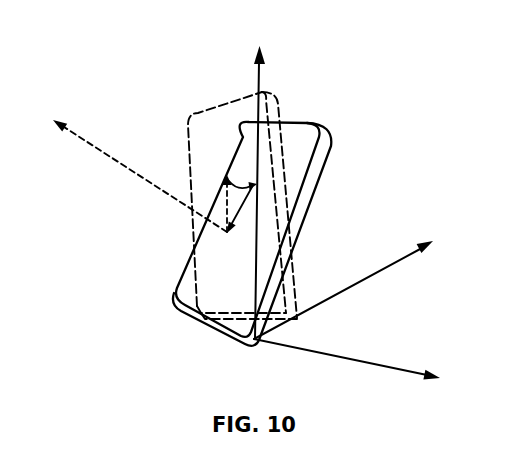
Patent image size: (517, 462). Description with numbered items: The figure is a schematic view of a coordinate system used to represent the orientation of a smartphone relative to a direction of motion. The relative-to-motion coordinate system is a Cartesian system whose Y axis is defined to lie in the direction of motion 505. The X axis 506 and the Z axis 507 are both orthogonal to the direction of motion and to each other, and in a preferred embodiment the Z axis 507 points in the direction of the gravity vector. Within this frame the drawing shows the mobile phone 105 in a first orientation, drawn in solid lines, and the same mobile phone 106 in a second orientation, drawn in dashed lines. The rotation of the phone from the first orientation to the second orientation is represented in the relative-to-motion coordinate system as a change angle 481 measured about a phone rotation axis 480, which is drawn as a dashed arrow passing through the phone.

The mobile phone 105 is at (181, 270).
The mobile phone 106 is at (187, 140).
The phone rotation axis 480 is at (127, 172).
The change angle 481 is at (237, 181).
The direction of motion 505 is at (397, 258).
The X axis 506 is at (397, 368).
The Z axis 507 is at (262, 77).